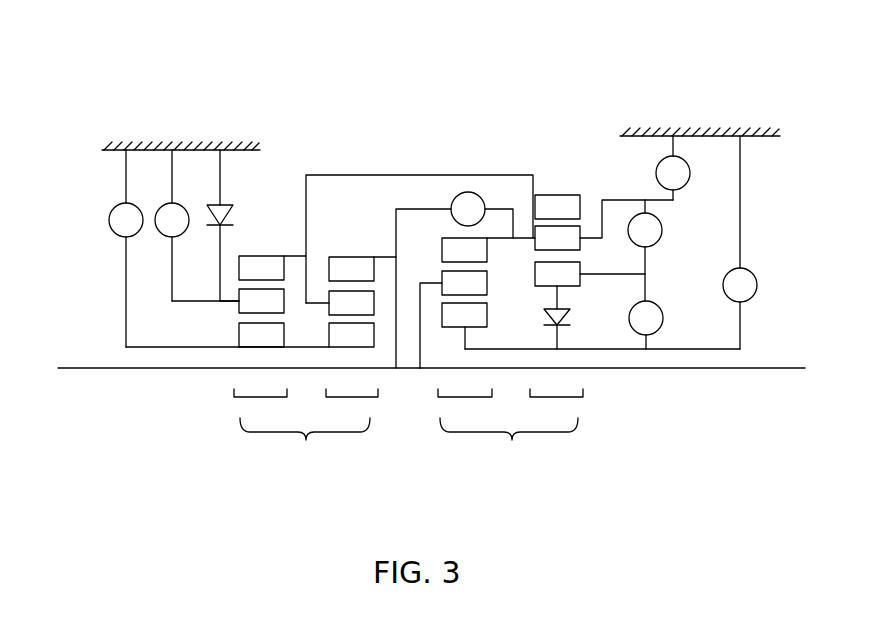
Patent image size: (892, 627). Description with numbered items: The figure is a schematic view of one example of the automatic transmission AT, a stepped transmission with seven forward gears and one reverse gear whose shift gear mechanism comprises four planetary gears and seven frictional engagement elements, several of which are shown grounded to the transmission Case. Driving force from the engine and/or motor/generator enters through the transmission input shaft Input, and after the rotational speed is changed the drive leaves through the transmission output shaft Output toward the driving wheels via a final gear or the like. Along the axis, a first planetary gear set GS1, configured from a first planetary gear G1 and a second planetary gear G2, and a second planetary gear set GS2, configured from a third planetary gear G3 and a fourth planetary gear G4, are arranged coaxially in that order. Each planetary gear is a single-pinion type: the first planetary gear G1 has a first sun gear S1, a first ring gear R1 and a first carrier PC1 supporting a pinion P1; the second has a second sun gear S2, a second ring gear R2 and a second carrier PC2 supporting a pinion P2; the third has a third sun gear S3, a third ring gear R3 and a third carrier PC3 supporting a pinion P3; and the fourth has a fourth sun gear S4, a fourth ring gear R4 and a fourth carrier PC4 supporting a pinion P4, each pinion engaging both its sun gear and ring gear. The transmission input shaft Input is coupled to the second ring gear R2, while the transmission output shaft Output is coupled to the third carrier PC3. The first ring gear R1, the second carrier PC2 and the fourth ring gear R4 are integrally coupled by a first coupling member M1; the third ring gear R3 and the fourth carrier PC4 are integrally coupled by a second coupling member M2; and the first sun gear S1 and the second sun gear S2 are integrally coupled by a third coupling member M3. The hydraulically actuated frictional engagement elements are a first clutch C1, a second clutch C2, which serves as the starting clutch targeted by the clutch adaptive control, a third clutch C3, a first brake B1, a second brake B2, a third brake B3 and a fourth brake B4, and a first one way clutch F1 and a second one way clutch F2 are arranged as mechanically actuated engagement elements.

The automatic transmission AT is at (448, 48).
The transmission case Case is at (143, 150).
The transmission input shaft Input is at (102, 370).
The transmission output shaft Output is at (680, 370).
The first brake B1 is at (197, 225).
The second brake B2 is at (740, 242).
The third brake B3 is at (174, 248).
The fourth brake B4 is at (673, 168).
The first clutch C1 is at (454, 280).
The second clutch C2 is at (645, 250).
The third clutch C3 is at (646, 325).
The first one way clutch F1 is at (232, 199).
The second one way clutch F2 is at (573, 316).
The first ring gear R1 is at (272, 268).
The pinion P1 is at (261, 301).
The first sun gear S1 is at (261, 335).
The first carrier PC1 is at (234, 301).
The second ring gear R2 is at (362, 269).
The pinion P2 is at (351, 303).
The second sun gear S2 is at (351, 335).
The second carrier PC2 is at (320, 303).
The third ring gear R3 is at (464, 250).
The pinion P3 is at (464, 283).
The third sun gear S3 is at (464, 326).
The third carrier PC3 is at (432, 283).
The fourth ring gear R4 is at (557, 207).
The pinion P4 is at (557, 238).
The fourth sun gear S4 is at (590, 274).
The fourth carrier PC4 is at (583, 241).
The first coupling member M1 is at (428, 175).
The second coupling member M2 is at (500, 240).
The third coupling member M3 is at (300, 348).
The first planetary gear G1 is at (260, 405).
The second planetary gear G2 is at (352, 405).
The third planetary gear G3 is at (465, 405).
The fourth planetary gear G4 is at (556, 405).
The first planetary gear set GS1 is at (305, 443).
The second planetary gear set GS2 is at (509, 443).